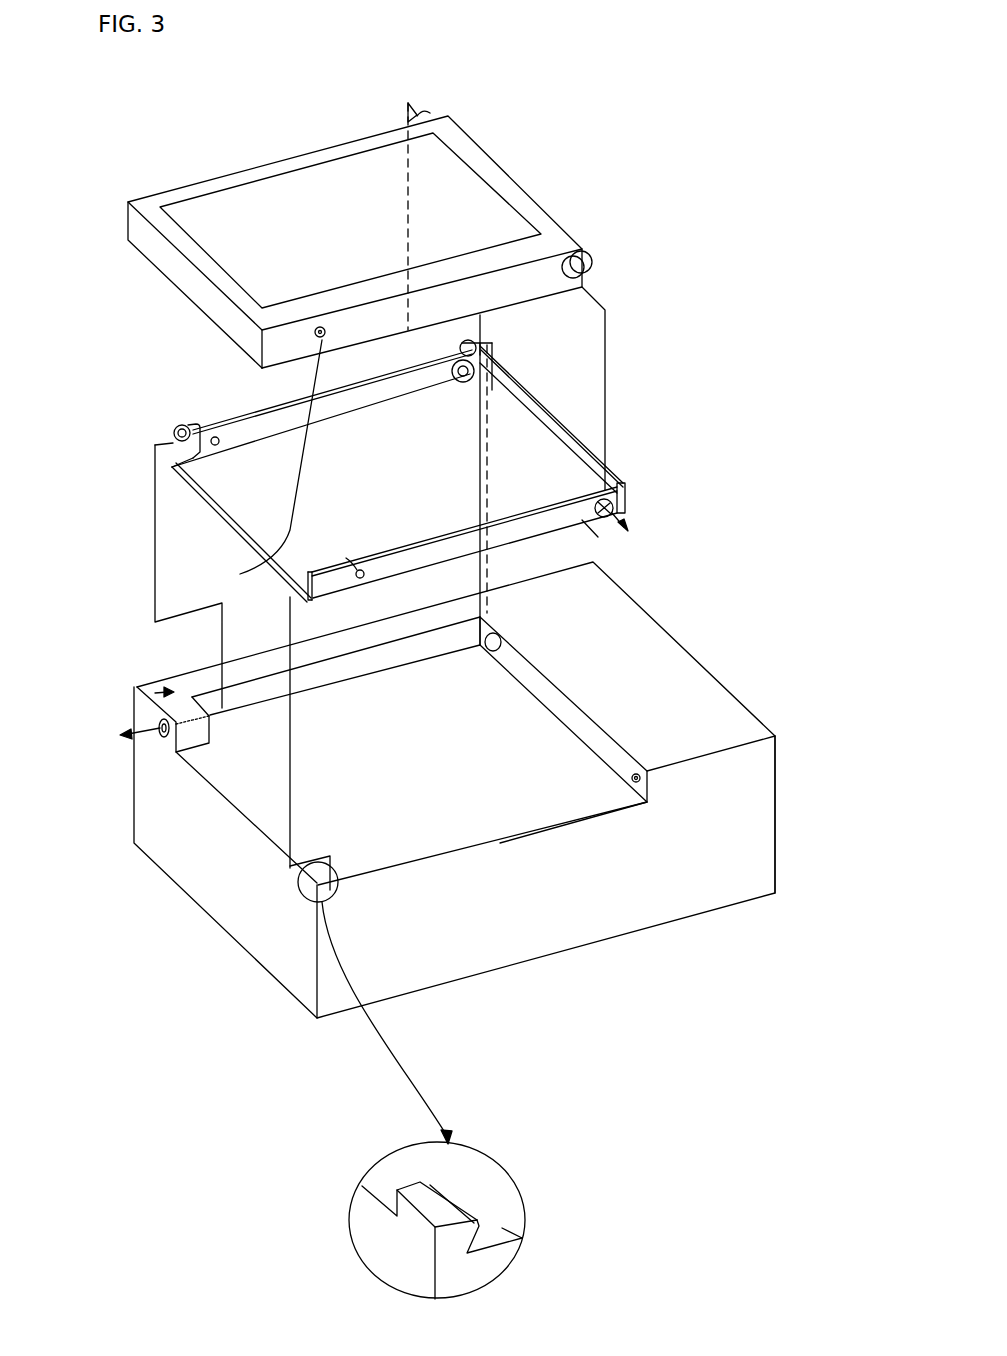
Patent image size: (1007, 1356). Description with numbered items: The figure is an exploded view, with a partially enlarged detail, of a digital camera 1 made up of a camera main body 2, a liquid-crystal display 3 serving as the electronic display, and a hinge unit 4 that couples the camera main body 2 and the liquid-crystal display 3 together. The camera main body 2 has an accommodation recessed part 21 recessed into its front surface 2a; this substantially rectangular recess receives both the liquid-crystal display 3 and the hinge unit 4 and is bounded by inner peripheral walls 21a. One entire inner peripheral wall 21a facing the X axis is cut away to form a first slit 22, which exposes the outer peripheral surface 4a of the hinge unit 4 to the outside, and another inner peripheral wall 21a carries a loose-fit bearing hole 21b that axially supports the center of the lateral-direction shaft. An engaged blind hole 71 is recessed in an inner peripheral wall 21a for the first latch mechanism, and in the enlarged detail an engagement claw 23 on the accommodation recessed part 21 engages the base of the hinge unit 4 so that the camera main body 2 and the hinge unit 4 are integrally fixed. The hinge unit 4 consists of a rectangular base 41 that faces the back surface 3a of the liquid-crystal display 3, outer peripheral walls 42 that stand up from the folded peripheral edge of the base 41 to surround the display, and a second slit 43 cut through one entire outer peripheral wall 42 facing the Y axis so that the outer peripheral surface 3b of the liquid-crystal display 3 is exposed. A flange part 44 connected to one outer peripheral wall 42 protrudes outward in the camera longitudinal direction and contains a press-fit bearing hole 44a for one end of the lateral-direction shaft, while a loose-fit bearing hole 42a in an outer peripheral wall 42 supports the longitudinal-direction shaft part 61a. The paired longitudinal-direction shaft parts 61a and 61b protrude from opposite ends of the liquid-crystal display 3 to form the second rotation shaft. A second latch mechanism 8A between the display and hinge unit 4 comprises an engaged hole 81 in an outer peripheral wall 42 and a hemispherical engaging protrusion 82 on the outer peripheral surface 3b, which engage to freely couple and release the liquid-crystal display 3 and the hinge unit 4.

The digital camera 1 is at (197, 140).
The camera main body 2 is at (464, 936).
The front surface 2a is at (152, 694).
The liquid-crystal display 3 is at (350, 325).
The back surface 3a is at (182, 294).
The outer peripheral surface 3b is at (153, 251).
The hinge unit 4 is at (395, 470).
The outer peripheral surface 4a is at (573, 512).
The second latch mechanism 8A is at (195, 655).
The accommodation recessed part 21 is at (255, 808).
The inner peripheral walls 21a is at (567, 700).
The loose-fit bearing hole 21b is at (505, 638).
The first slit 22 is at (533, 824).
The engagement claw 23 is at (463, 1236).
The rectangular base 41 is at (215, 492).
The outer peripheral walls 42 is at (262, 420).
The loose-fit bearing hole 42a is at (478, 350).
The second slit 43 is at (263, 529).
The flange part 44 is at (175, 432).
The press-fit bearing hole 44a is at (178, 445).
The longitudinal-direction shaft part 61a is at (433, 112).
The longitudinal-direction shaft part 61b is at (586, 258).
The engaged blind hole 71 is at (630, 786).
The engaged hole 81 is at (273, 580).
The engaging protrusion 82 is at (303, 572).